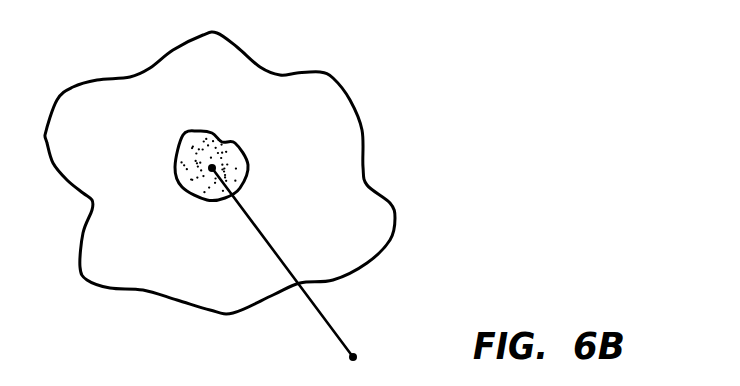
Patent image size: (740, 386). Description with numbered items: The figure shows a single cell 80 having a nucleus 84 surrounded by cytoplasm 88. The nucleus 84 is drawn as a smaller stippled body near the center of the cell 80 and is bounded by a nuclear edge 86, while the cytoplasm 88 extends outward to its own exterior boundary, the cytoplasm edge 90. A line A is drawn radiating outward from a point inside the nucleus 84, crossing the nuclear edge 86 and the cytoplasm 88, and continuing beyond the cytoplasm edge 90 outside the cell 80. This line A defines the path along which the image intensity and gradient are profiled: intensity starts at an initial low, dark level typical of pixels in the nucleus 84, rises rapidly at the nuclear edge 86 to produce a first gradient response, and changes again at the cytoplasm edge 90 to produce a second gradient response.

The cell 80 is at (339, 80).
The nucleus 84 is at (238, 143).
The nuclear edge 86 is at (192, 135).
The cytoplasm 88 is at (330, 153).
The cytoplasm edge 90 is at (393, 207).
The line A is at (320, 315).